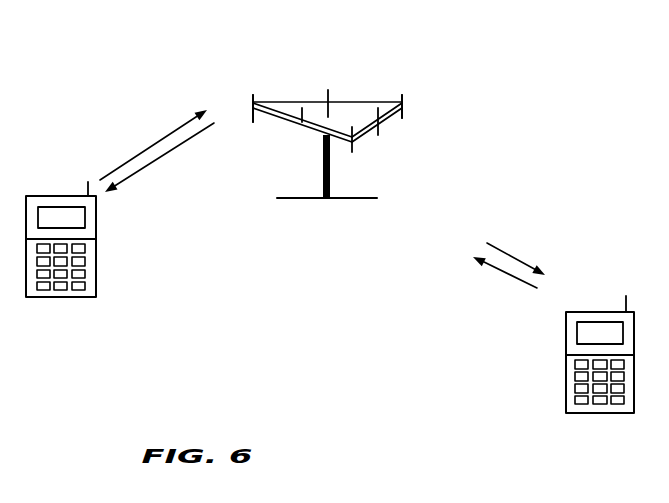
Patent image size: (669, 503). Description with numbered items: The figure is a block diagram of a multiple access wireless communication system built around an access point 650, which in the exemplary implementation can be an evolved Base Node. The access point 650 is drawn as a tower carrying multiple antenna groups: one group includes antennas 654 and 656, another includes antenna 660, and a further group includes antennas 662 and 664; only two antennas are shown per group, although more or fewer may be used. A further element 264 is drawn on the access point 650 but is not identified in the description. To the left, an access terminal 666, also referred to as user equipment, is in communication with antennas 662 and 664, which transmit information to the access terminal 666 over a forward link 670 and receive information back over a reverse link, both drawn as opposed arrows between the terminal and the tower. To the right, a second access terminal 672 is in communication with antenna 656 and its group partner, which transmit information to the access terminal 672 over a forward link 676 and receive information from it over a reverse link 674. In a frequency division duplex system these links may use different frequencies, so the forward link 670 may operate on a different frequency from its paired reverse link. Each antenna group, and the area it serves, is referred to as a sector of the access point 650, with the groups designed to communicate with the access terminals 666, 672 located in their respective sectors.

The access point 650 is at (313, 199).
The antenna 660 is at (328, 90).
The antenna 662 is at (255, 103).
The antenna 264 is at (302, 108).
The antenna 654 is at (405, 110).
The antenna 656 is at (381, 133).
The access terminal 666 is at (77, 196).
The antenna 664 is at (153, 146).
The forward link 670 is at (167, 155).
The access terminal 672 is at (585, 312).
The forward link 676 is at (522, 262).
The reverse link 674 is at (495, 268).